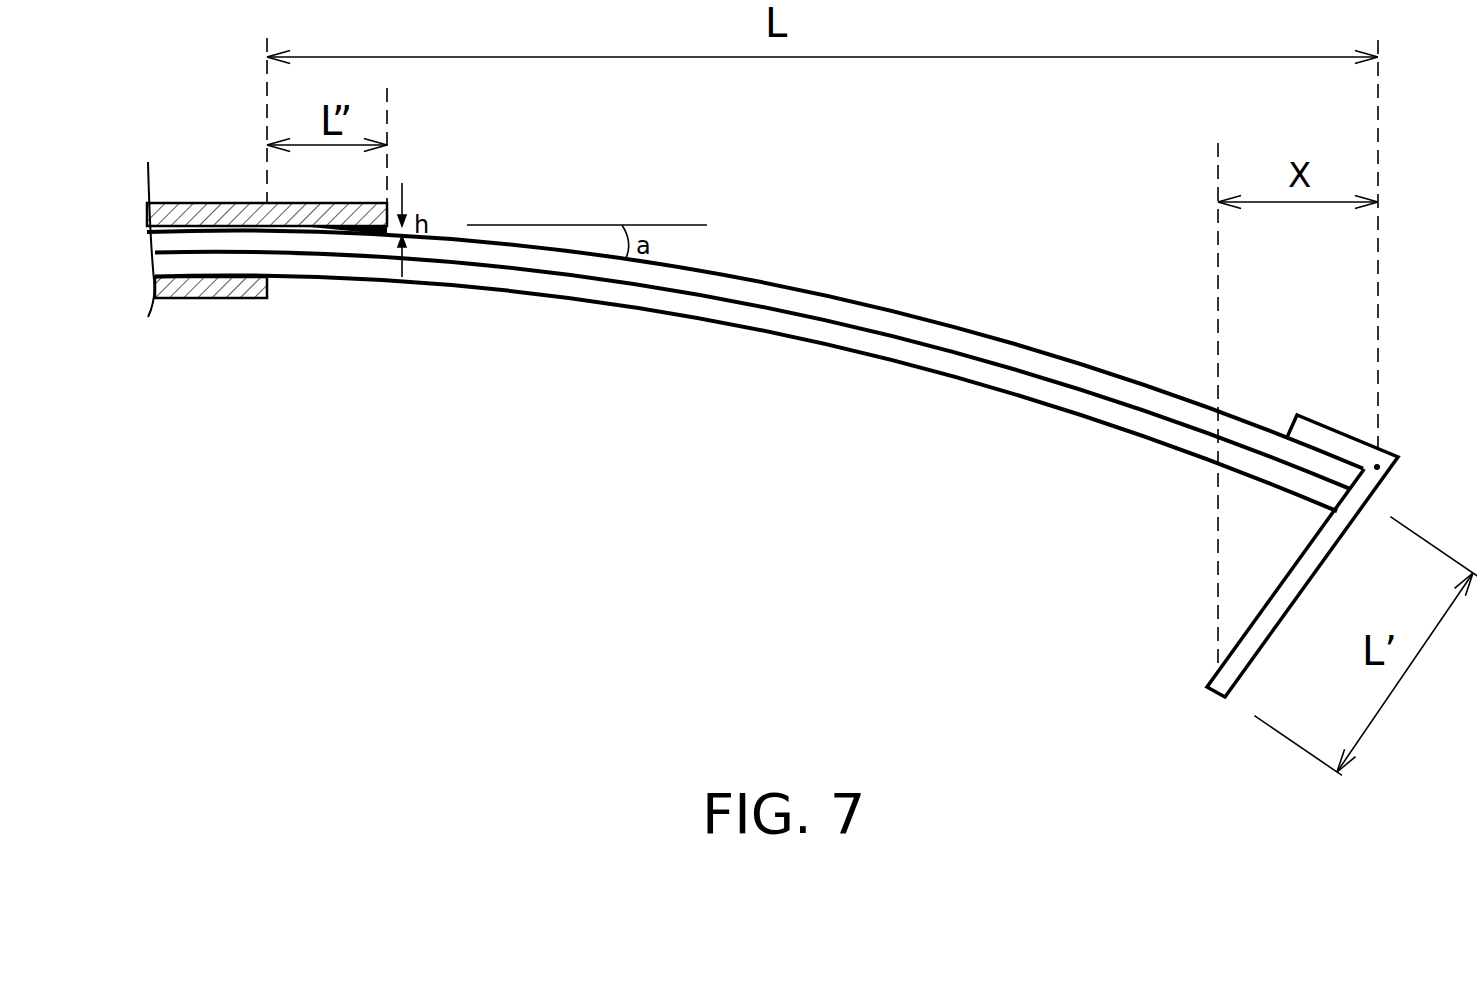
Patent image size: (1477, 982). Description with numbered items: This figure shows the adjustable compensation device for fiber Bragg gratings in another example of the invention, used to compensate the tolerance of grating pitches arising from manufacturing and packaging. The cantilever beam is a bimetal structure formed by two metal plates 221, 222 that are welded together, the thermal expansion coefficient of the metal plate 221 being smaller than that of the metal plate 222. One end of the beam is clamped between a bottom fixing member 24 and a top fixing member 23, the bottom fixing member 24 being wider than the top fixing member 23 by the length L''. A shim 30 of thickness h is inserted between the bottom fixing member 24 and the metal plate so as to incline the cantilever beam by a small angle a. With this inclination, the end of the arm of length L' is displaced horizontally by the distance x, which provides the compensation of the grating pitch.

The bottom fixing member 24 is at (203, 213).
The top fixing member 23 is at (212, 282).
The shim 30 is at (378, 232).
The metal plate 222 is at (1007, 355).
The metal plate 221 is at (908, 353).